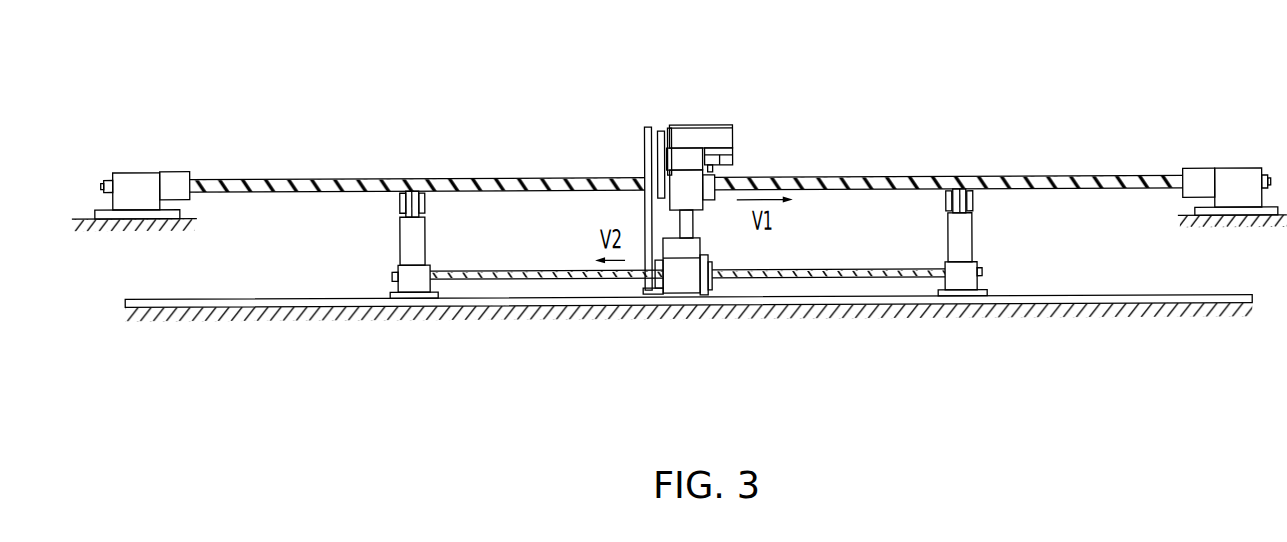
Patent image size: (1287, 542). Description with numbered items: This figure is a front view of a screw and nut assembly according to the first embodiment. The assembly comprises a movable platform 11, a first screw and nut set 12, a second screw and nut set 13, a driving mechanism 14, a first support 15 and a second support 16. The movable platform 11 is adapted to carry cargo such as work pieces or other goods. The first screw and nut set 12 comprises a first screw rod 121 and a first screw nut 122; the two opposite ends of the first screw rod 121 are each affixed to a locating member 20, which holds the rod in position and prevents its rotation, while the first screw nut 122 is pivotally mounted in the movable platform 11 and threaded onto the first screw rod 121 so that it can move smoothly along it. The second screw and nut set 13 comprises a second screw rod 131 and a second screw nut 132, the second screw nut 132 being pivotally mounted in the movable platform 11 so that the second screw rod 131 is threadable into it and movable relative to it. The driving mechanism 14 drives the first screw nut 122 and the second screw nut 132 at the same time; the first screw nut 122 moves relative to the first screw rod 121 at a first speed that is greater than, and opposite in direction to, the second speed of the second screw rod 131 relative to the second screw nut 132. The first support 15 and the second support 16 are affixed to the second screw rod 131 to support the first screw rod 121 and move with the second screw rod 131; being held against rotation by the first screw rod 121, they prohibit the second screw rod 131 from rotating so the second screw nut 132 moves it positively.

The movable platform 11 is at (685, 178).
The first screw and nut set 12 is at (686, 120).
The first screw rod 121 is at (838, 183).
The first screw nut 122 is at (749, 147).
The second screw and nut set 13 is at (688, 339).
The second screw rod 131 is at (797, 280).
The second screw nut 132 is at (718, 273).
The driving mechanism 14 is at (717, 110).
The first support 15 is at (973, 236).
The second support 16 is at (400, 241).
The locating member 20 is at (137, 170).